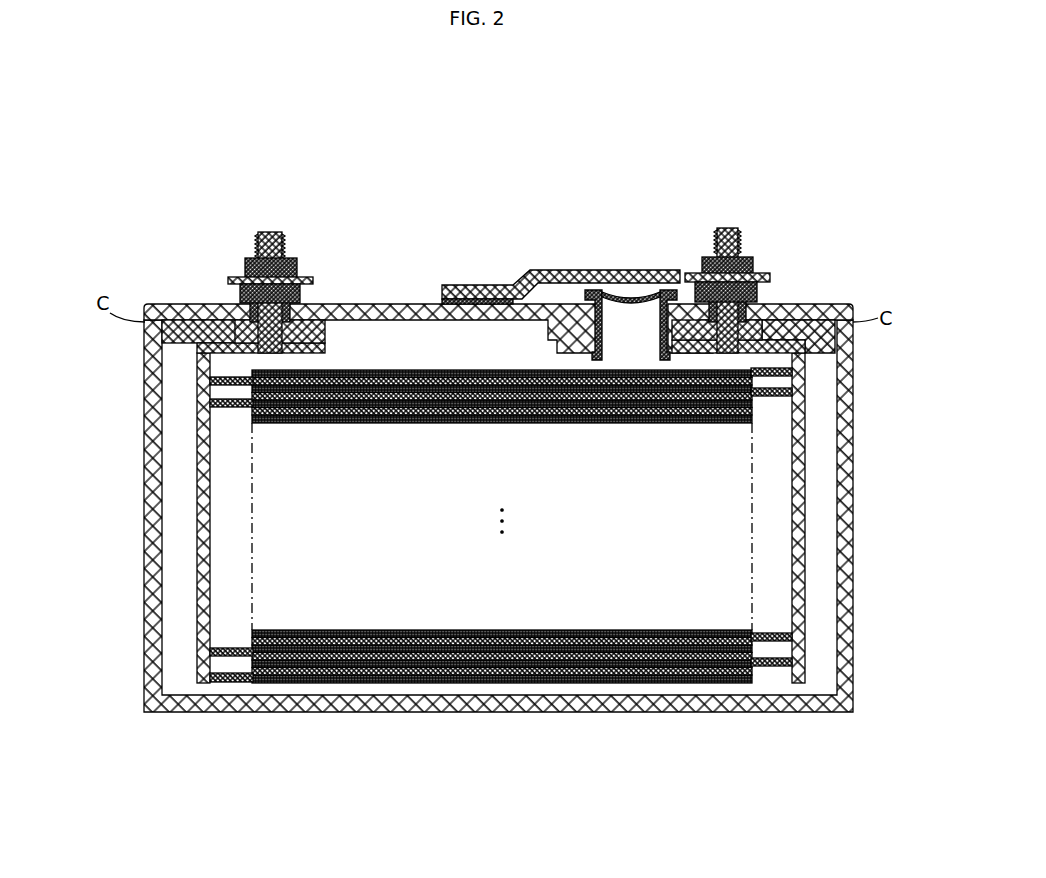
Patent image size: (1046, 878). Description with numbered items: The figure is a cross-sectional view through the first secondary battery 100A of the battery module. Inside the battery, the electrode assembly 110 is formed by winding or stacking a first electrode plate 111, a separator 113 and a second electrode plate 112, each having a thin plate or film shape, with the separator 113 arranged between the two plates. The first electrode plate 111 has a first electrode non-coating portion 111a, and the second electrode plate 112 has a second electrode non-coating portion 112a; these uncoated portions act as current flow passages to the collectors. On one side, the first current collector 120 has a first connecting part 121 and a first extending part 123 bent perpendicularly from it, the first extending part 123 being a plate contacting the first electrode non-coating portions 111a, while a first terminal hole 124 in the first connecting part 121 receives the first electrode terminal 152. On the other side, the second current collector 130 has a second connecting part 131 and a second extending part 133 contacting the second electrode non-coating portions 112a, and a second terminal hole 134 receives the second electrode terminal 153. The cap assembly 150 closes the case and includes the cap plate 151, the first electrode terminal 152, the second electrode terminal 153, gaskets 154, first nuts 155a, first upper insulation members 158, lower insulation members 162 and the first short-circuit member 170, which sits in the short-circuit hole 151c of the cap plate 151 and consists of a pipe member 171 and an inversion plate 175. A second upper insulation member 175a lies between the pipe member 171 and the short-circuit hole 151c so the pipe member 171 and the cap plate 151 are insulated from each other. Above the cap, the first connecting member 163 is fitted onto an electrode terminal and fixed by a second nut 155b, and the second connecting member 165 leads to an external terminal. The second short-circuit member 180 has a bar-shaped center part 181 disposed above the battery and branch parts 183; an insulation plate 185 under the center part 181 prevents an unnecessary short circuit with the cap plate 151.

The first secondary battery 100A is at (870, 172).
The electrode assembly 110 is at (500, 568).
The first electrode plate 111 is at (667, 686).
The first electrode non-coating portion 111a is at (773, 668).
The second electrode plate 112 is at (380, 688).
The second electrode non-coating portion 112a is at (237, 684).
The separator 113 is at (515, 690).
The first current collector 120 is at (801, 478).
The first connecting part 121 is at (822, 328).
The first extending part 123 is at (806, 536).
The first terminal hole 124 is at (740, 360).
The second current collector 130 is at (197, 467).
The second connecting part 131 is at (210, 326).
The second extending part 133 is at (205, 550).
The second terminal hole 134 is at (240, 348).
The cap assembly 150 is at (498, 270).
The cap plate 151 is at (410, 306).
The short-circuit hole 151c is at (642, 334).
The first electrode terminal 152 is at (727, 232).
The second electrode terminal 153 is at (268, 236).
The gasket 154 is at (318, 322).
The first nut 155a is at (240, 293).
The second nut 155b is at (250, 262).
The first upper insulation member 158 is at (300, 296).
The lower insulation member 162 is at (160, 330).
The first connecting member 163 is at (306, 278).
The second connecting member 165 is at (690, 276).
The first short-circuit member 170 is at (607, 263).
The pipe member 171 is at (600, 294).
The inversion plate 175 is at (630, 292).
The second upper insulation member 175a is at (590, 300).
The second short-circuit member 180 is at (558, 250).
The center part 181 is at (488, 285).
The branch part 183 is at (662, 292).
The insulation plate 185 is at (443, 290).